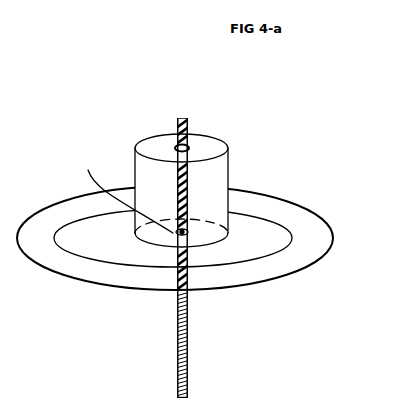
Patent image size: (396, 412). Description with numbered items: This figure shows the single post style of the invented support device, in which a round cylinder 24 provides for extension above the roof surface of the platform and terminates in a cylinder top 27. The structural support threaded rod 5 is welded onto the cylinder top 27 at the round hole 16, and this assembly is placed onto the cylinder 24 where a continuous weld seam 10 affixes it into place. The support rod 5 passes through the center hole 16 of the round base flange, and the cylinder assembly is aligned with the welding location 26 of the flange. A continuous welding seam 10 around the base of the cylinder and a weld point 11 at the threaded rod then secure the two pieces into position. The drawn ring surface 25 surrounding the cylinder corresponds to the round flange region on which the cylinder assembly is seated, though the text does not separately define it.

The structural support threaded rod 5 is at (171, 321).
The continuous weld seam 10 is at (140, 136).
The weld point 11 is at (188, 232).
The round hole 16 is at (117, 191).
The round cylinder 24 is at (208, 185).
The flange disc 25 is at (295, 221).
The welding location 26 is at (220, 245).
The cylinder top 27 is at (197, 147).